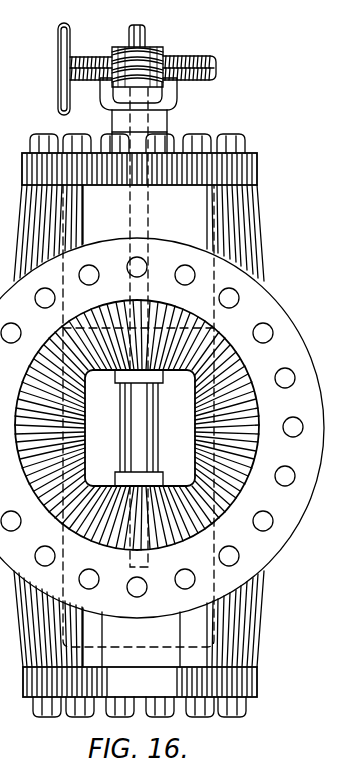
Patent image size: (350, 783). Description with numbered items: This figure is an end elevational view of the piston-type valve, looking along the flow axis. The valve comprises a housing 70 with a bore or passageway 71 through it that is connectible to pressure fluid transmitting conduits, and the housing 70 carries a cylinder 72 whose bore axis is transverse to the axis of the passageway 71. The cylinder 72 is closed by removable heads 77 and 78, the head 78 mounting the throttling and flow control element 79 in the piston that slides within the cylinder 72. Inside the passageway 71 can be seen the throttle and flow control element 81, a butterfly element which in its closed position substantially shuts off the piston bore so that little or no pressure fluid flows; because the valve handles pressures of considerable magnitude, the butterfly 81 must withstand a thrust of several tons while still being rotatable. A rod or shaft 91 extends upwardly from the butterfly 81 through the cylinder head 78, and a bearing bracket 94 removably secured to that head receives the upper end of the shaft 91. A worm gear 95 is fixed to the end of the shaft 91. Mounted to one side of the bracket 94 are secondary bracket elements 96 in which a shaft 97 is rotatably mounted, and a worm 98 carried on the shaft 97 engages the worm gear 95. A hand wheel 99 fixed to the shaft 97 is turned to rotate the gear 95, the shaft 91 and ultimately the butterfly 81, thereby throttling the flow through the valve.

The housing 70 is at (270, 305).
The bore or passageway 71 is at (252, 412).
The cylinder 72 is at (262, 606).
The removable head 77 is at (256, 172).
The removable head 78 is at (258, 686).
The throttling and flow control element 79 is at (182, 114).
The throttle and flow control element 81 is at (157, 422).
The rod or shaft 91 is at (146, 33).
The bearing bracket 94 is at (112, 127).
The worm gear 95 is at (216, 57).
The secondary bracket elements 96 is at (178, 92).
The shaft 97 is at (90, 84).
The worm 98 is at (125, 48).
The hand wheel 99 is at (58, 28).